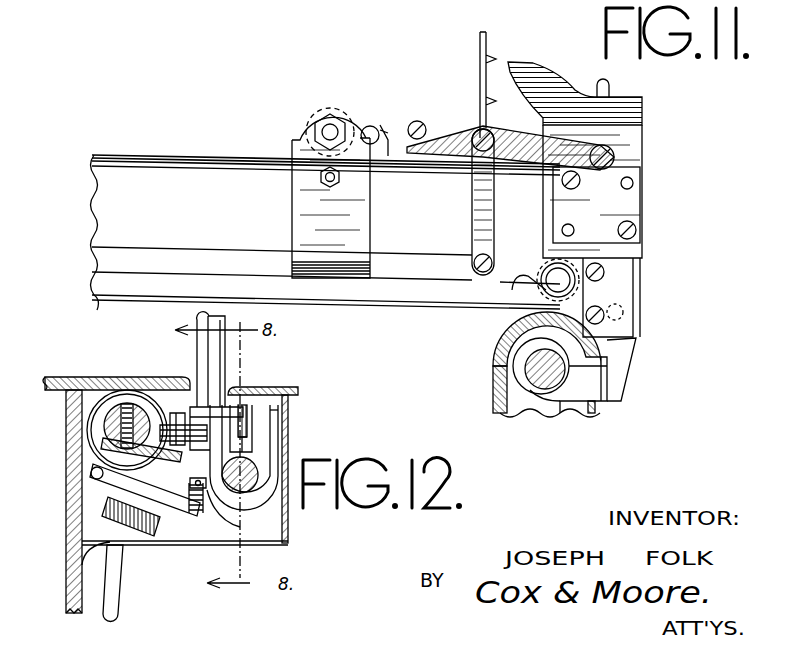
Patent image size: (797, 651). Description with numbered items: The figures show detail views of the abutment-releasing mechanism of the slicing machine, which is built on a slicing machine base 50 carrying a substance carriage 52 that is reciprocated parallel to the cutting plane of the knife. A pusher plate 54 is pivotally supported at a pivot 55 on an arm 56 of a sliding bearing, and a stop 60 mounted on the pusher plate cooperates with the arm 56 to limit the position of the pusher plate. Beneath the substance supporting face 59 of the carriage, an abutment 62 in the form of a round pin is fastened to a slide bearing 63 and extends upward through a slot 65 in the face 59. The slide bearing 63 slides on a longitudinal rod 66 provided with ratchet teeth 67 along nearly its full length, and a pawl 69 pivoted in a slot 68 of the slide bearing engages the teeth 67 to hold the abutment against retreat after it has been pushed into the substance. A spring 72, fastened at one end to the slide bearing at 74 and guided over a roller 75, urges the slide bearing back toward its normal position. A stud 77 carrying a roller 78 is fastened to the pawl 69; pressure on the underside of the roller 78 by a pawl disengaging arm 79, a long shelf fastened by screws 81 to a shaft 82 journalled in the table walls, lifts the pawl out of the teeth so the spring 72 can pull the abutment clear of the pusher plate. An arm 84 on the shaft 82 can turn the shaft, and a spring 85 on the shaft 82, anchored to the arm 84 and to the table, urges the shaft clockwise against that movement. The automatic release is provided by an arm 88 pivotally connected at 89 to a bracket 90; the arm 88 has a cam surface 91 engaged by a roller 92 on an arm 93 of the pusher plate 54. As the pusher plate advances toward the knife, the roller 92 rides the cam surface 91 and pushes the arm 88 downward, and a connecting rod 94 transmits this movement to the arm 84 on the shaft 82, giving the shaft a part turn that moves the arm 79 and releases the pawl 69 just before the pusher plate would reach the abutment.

In FIG. 11, the slicing machine base 50 is at (493, 396).
In FIG. 11, the substance carriage 52 is at (96, 213).
In FIG. 12, the substance carriage 52 is at (66, 429).
In FIG. 11, the pusher plate 54 is at (484, 32).
In FIG. 11, the pivot 55 is at (330, 118).
In FIG. 11, the arm 56 is at (300, 203).
In FIG. 12, the substance supporting face 59 is at (82, 377).
In FIG. 11, the stop 60 is at (371, 127).
In FIG. 12, the abutment 62 is at (225, 342).
In FIG. 12, the slide bearing 63 is at (273, 440).
In FIG. 12, the slot 65 is at (244, 406).
In FIG. 12, the rod 66 is at (254, 488).
In FIG. 12, the ratchet teeth 67 is at (252, 458).
In FIG. 12, the slot 68 is at (270, 428).
In FIG. 12, the pawl 69 is at (264, 418).
In FIG. 12, the spring 72 is at (92, 474).
In FIG. 12, the spring attachment 74 is at (240, 527).
In FIG. 12, the roller 75 is at (180, 514).
In FIG. 12, the stud 77 is at (184, 414).
In FIG. 12, the roller 78 is at (175, 424).
In FIG. 12, the pawl disengaging arm 79 is at (100, 443).
In FIG. 12, the screws 81 is at (127, 412).
In FIG. 11, the shaft 82 is at (545, 290).
In FIG. 12, the shaft 82 is at (104, 412).
In FIG. 11, the arm 84 is at (480, 278).
In FIG. 11, the spring 85 is at (540, 280).
In FIG. 11, the arm 88 is at (520, 146).
In FIG. 11, the pivotal connection 89 is at (615, 157).
In FIG. 11, the bracket 90 is at (643, 105).
In FIG. 11, the cam surface 91 is at (476, 133).
In FIG. 11, the roller 92 is at (418, 121).
In FIG. 11, the arm 93 is at (385, 130).
In FIG. 11, the connecting rod 94 is at (472, 204).